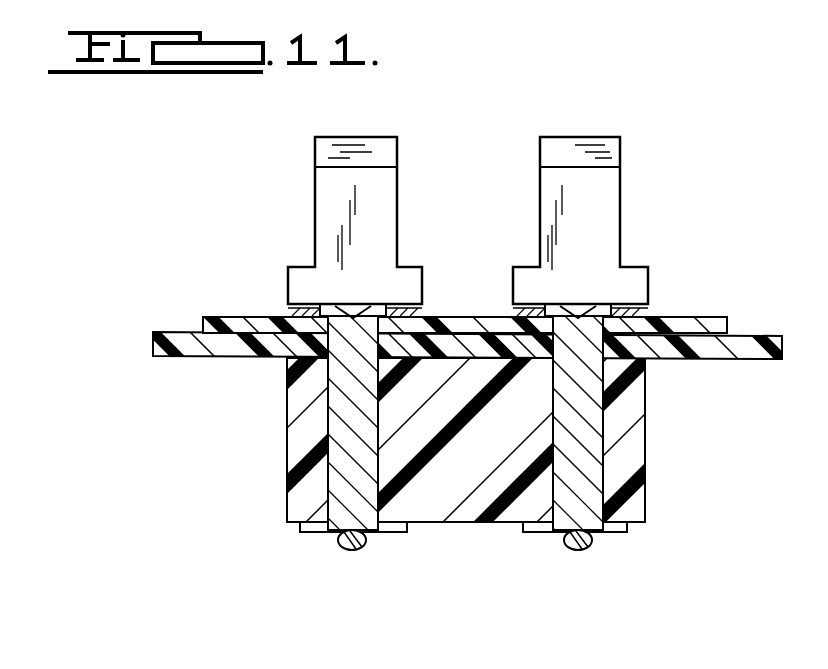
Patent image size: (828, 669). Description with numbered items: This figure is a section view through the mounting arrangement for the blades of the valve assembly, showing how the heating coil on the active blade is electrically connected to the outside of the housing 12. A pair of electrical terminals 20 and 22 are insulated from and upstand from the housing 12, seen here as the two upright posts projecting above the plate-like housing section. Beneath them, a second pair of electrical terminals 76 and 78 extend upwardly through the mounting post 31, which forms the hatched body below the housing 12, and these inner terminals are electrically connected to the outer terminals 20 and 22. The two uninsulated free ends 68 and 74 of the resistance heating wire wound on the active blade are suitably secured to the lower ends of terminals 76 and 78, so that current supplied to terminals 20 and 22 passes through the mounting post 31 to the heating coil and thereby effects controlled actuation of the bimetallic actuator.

The housing 12 is at (173, 330).
The electrical terminal 20 is at (325, 193).
The electrical terminal 22 is at (607, 188).
The mounting post 31 is at (630, 454).
The free end of heating wire 68 is at (345, 548).
The free end of heating wire 74 is at (585, 550).
The electrical terminal 76 is at (340, 420).
The electrical terminal 78 is at (585, 423).